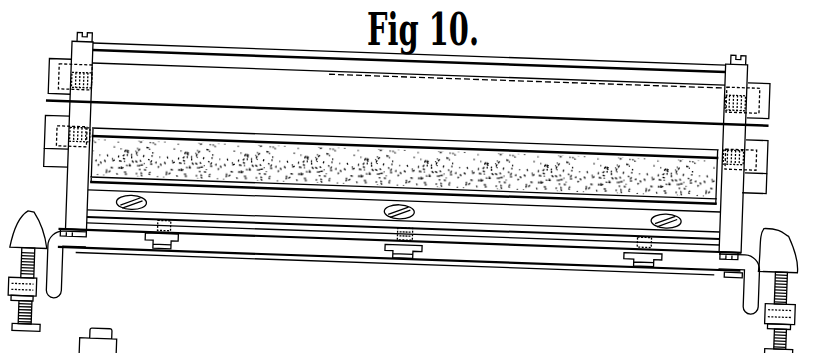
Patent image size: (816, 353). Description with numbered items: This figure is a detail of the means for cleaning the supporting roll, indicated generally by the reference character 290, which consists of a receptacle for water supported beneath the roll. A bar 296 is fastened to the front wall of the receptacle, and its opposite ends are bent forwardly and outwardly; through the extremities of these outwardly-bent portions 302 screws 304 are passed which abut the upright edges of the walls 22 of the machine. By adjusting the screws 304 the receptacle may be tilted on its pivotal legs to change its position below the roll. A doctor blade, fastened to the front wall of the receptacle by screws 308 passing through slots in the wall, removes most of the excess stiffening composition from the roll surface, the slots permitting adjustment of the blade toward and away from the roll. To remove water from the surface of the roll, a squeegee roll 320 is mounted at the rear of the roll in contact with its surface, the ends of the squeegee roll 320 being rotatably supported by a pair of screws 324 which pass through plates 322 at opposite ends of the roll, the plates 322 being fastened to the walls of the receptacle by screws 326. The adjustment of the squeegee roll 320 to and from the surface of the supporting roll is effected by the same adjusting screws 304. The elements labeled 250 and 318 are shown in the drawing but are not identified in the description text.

The walls 22 is at (38, 228).
The cap 250 is at (128, 343).
The means for cleaning the roll 290 is at (579, 37).
The bar 296 is at (522, 247).
The outwardly-bent portions 302 is at (71, 282).
The screws 304 is at (42, 316).
The screws 308 is at (392, 242).
The screw 318 is at (670, 195).
The squeegee roll 320 is at (408, 96).
The plates 322 is at (49, 114).
The screws 324 is at (49, 80).
The screws 326 is at (48, 149).